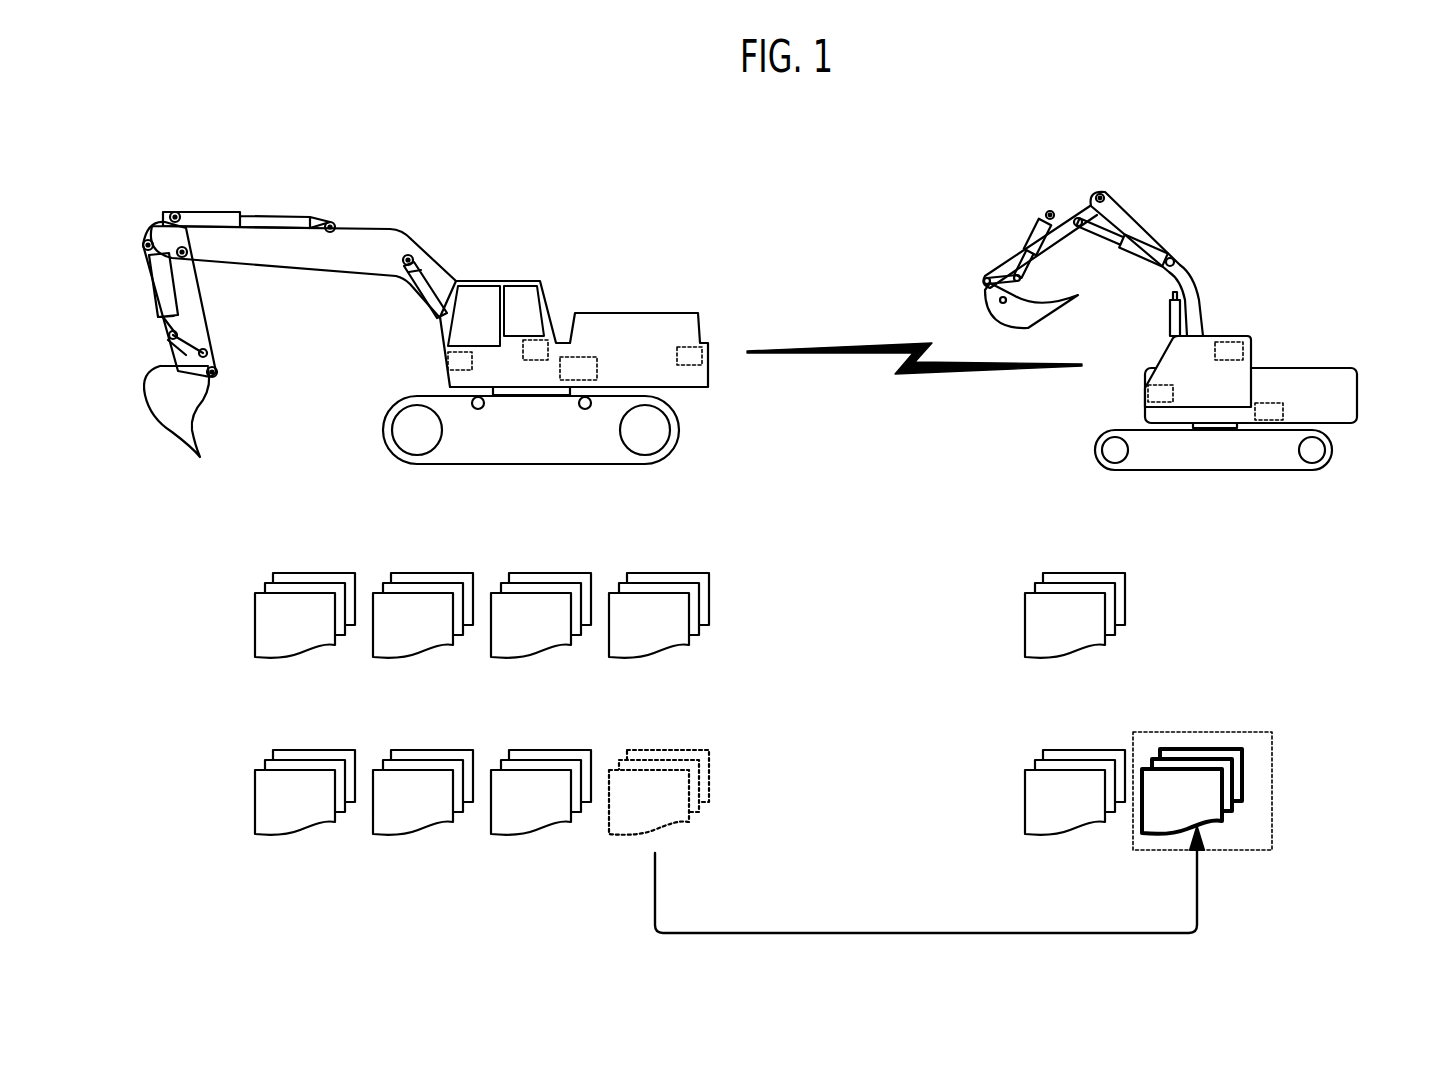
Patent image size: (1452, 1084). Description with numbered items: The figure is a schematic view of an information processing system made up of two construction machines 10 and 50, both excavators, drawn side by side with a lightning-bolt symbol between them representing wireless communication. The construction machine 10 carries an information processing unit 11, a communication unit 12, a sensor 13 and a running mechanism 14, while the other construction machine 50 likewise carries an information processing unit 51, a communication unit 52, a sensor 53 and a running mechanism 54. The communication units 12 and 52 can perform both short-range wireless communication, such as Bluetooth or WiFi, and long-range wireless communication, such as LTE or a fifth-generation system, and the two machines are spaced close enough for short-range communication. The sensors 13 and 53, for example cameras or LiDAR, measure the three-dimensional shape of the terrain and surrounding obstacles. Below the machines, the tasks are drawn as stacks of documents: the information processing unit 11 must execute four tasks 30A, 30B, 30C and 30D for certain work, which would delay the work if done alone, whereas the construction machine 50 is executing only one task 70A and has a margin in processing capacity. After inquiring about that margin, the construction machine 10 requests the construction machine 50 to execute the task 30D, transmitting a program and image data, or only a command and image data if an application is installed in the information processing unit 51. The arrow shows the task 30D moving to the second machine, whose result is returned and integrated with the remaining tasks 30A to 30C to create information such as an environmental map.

The construction machine 10 is at (496, 212).
The information processing unit 11 is at (582, 357).
The communication unit 12 is at (535, 342).
The sensor 13 is at (457, 368).
The running mechanism 14 is at (672, 432).
The construction machine 50 is at (1264, 218).
The information processing unit 51 is at (1270, 403).
The communication unit 52 is at (1227, 343).
The sensor 53 is at (1152, 388).
The running mechanism 54 is at (1334, 445).
The task 30A is at (303, 573).
The task 30B is at (421, 573).
The task 30C is at (539, 573).
The task 30D is at (657, 573).
The task 70A is at (1072, 573).